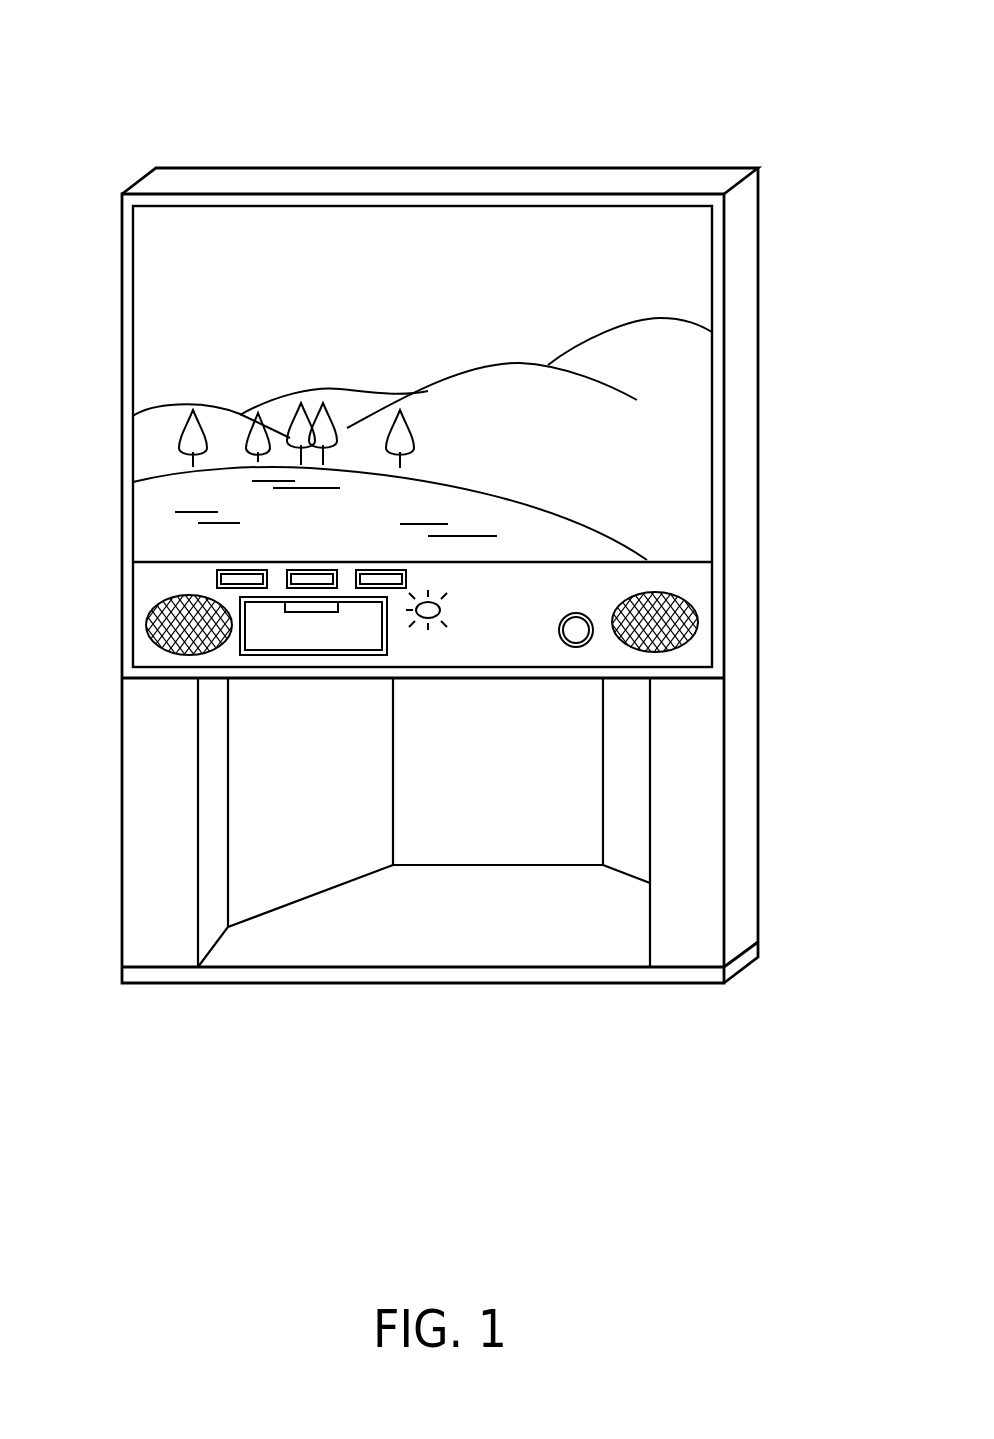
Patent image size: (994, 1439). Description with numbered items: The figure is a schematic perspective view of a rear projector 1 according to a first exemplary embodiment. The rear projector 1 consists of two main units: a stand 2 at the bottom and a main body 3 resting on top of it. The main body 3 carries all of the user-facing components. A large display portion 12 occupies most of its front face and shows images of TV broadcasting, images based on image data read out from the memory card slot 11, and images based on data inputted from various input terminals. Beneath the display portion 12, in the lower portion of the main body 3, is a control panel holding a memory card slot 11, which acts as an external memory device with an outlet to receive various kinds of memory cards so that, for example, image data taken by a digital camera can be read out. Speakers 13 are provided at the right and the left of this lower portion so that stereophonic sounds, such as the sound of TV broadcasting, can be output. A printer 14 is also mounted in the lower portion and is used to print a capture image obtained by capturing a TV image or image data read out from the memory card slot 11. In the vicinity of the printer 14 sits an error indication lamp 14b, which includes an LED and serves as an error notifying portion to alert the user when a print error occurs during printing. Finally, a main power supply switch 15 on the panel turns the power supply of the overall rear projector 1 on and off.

The rear projector 1 is at (676, 90).
The stand 2 is at (804, 685).
The main body 3 is at (842, 182).
The memory card slot 11 is at (380, 568).
The display portion 12 is at (152, 330).
The speakers 13 is at (150, 603).
The printer 14 is at (308, 656).
The error indication lamp 14b is at (442, 610).
The main power supply switch 15 is at (580, 614).